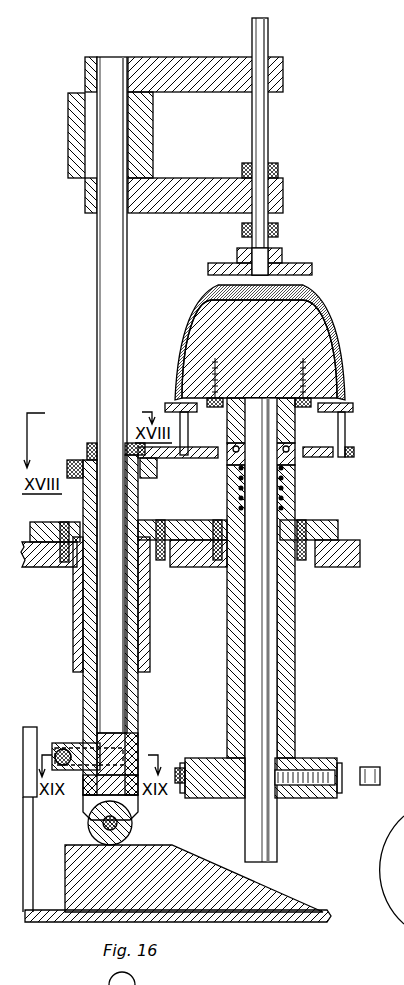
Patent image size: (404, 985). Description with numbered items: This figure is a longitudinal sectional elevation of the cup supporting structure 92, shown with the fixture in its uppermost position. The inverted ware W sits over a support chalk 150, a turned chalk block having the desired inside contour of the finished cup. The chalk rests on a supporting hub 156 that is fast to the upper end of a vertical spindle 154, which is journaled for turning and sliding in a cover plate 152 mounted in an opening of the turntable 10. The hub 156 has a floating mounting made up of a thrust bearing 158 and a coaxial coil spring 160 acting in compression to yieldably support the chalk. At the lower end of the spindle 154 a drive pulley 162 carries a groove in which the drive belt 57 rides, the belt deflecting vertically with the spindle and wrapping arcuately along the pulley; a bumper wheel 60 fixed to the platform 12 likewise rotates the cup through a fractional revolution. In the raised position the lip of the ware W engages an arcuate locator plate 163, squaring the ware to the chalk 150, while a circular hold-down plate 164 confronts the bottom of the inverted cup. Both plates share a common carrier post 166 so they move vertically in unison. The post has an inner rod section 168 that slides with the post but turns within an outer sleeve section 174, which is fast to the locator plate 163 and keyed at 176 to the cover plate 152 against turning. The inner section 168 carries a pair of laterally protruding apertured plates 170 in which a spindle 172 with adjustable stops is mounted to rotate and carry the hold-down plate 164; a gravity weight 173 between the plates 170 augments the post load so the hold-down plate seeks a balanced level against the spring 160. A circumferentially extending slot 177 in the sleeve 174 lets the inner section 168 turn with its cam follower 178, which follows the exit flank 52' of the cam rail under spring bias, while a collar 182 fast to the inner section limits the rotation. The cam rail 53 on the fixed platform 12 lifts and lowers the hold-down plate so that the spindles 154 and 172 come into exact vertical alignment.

The apertured plates 170 is at (220, 57).
The spindle 172 is at (268, 124).
The gravity weight 173 is at (68, 147).
The inner rod section 168 is at (97, 296).
The hold-down plate 164 is at (305, 263).
The ware W is at (200, 315).
The cup supporting structure 92 is at (257, 346).
The support chalk 150 is at (320, 331).
The locator plate 163 is at (353, 407).
The carrier post 166 is at (100, 405).
The collar 182 is at (90, 450).
The supporting hub 156 is at (295, 426).
The thrust bearing 158 is at (300, 458).
The spindle 154 is at (255, 478).
The coil spring 160 is at (241, 498).
The cover plate 152 is at (335, 520).
The key 176 is at (84, 506).
The turntable 10 is at (333, 556).
The outer sleeve section 174 is at (83, 610).
The exit flank 52' is at (32, 795).
The circumferentially extending slot 177 is at (84, 745).
The cam follower 178 is at (70, 745).
The drive belt 57 is at (178, 768).
The drive pulley 162 is at (312, 758).
The bumper wheel 60 is at (370, 785).
The cam rail 53 is at (199, 858).
The fixed platform 12 is at (327, 914).